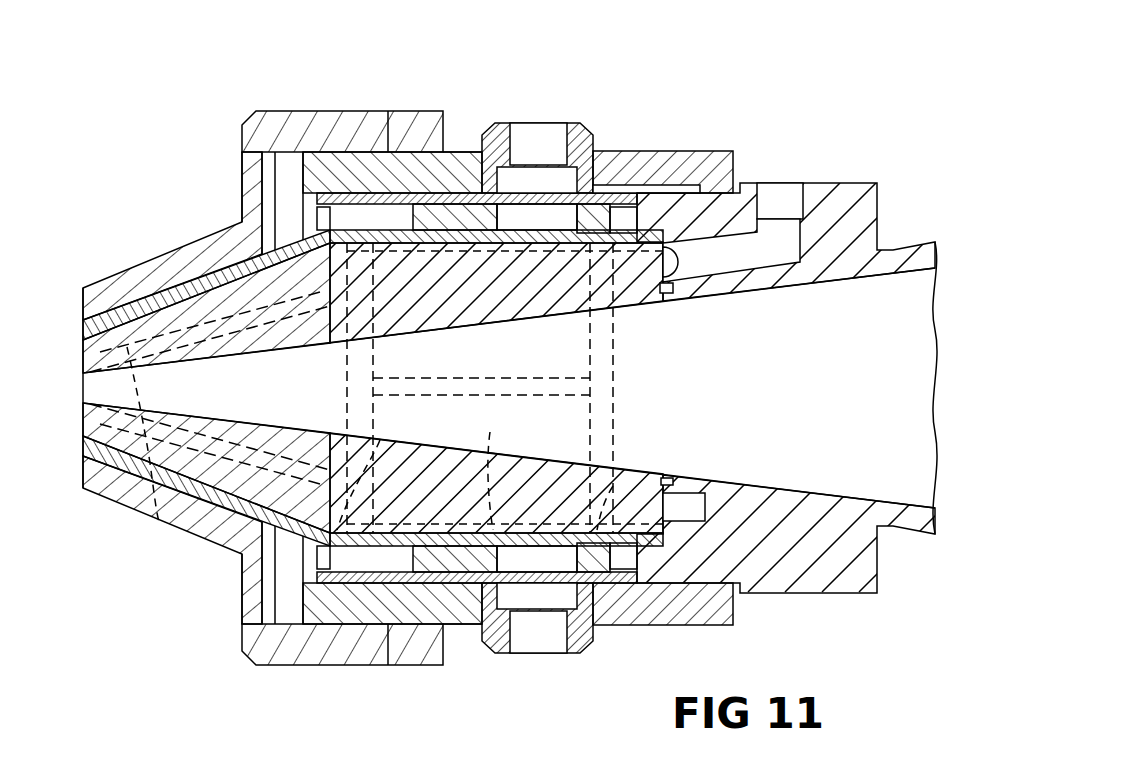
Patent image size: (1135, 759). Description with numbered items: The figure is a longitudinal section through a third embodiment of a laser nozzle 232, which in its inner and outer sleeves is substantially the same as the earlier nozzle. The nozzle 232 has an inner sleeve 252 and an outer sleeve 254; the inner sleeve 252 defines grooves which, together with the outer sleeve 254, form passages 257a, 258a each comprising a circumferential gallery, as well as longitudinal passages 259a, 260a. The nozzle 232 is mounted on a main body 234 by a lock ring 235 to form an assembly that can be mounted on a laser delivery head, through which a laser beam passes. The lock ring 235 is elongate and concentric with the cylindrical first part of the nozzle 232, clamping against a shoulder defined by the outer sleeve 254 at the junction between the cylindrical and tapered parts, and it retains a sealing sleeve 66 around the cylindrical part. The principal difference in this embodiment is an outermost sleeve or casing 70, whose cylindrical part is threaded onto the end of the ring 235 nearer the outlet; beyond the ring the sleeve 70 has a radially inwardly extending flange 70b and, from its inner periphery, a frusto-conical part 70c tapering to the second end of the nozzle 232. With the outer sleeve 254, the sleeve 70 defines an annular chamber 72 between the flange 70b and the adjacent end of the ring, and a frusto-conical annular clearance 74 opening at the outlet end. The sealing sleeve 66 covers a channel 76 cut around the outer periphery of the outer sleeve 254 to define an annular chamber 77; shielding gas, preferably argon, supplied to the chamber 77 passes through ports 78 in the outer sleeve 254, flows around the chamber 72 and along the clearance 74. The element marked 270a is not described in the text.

The sealing sleeve 66 is at (561, 195).
The outermost sleeve 70 is at (238, 188).
The radially inwardly extending flange 70b is at (250, 170).
The frusto-conical part 70c is at (173, 523).
The annular chamber 72 is at (290, 597).
The frusto-conical annular clearance 74 is at (175, 284).
The channel 76 is at (401, 560).
The annular chamber 77 is at (373, 560).
The ports 78 is at (322, 223).
The nozzle 232 is at (141, 598).
The main body 234 is at (888, 564).
The lock ring 235 is at (688, 163).
The inner sleeve 252 is at (473, 292).
The outer sleeve 254 is at (227, 503).
The passage 257a is at (613, 486).
The passage 258a is at (380, 440).
The longitudinal passage 259a is at (490, 432).
The longitudinal passage 260a is at (160, 522).
The end flange 270a is at (333, 125).